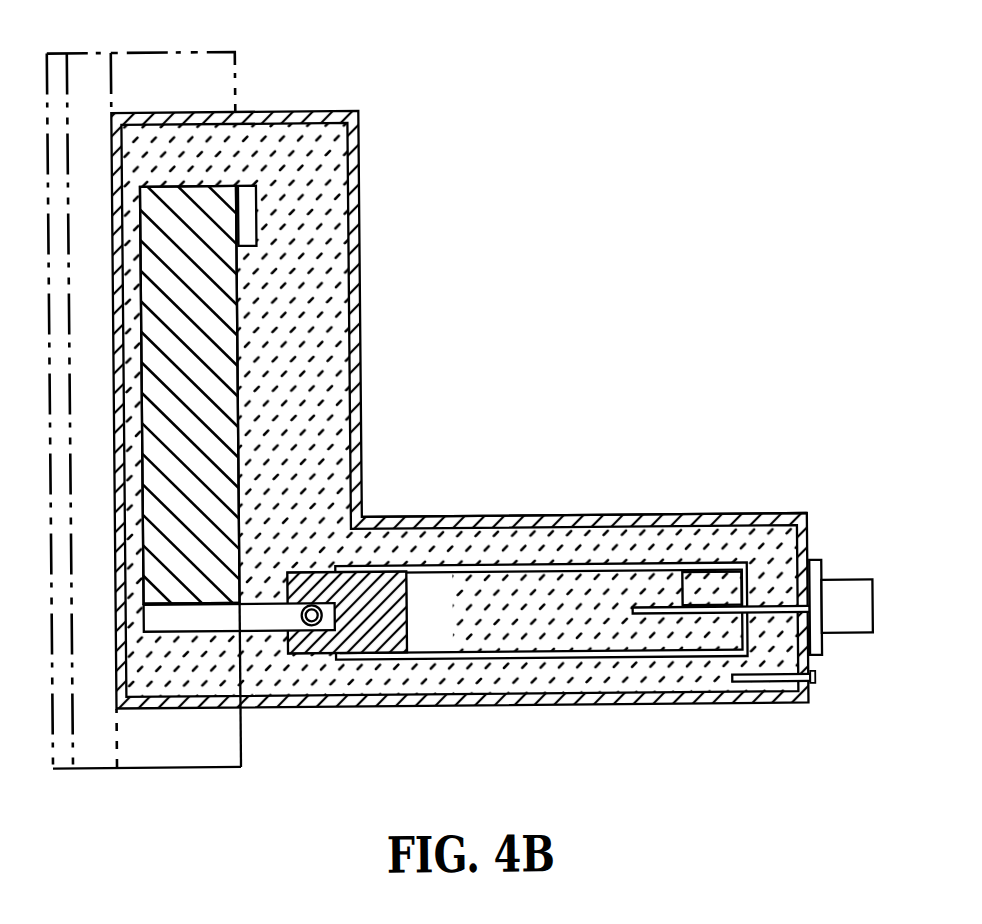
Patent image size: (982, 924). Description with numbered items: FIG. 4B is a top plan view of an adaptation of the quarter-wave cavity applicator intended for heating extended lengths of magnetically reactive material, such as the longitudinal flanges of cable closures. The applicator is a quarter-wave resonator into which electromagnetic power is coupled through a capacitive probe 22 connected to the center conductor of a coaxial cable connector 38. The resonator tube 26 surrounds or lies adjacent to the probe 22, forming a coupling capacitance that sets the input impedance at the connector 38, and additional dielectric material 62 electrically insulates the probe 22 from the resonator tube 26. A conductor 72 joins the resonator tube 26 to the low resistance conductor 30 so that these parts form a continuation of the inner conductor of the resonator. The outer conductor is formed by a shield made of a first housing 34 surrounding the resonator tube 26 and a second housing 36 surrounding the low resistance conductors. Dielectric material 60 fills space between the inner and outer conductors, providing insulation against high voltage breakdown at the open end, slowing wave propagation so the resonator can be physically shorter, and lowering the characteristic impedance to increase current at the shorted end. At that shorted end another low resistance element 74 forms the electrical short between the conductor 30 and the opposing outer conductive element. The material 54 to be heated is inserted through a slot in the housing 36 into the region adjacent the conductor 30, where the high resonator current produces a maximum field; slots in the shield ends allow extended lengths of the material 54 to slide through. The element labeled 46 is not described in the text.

The capacitive probe 22 is at (682, 602).
The resonator tube 26 is at (615, 564).
The low resistance conductor 30 is at (219, 325).
The first housing 34 is at (751, 516).
The second housing 36 is at (362, 361).
The coaxial cable connector 38 is at (845, 583).
The pivot pin 46 is at (318, 621).
The material to be heated 54 is at (145, 760).
The dielectric material 60 is at (531, 687).
The additional dielectric material 62 is at (645, 639).
The conductor 72 is at (254, 620).
The low resistance element 74 is at (258, 184).